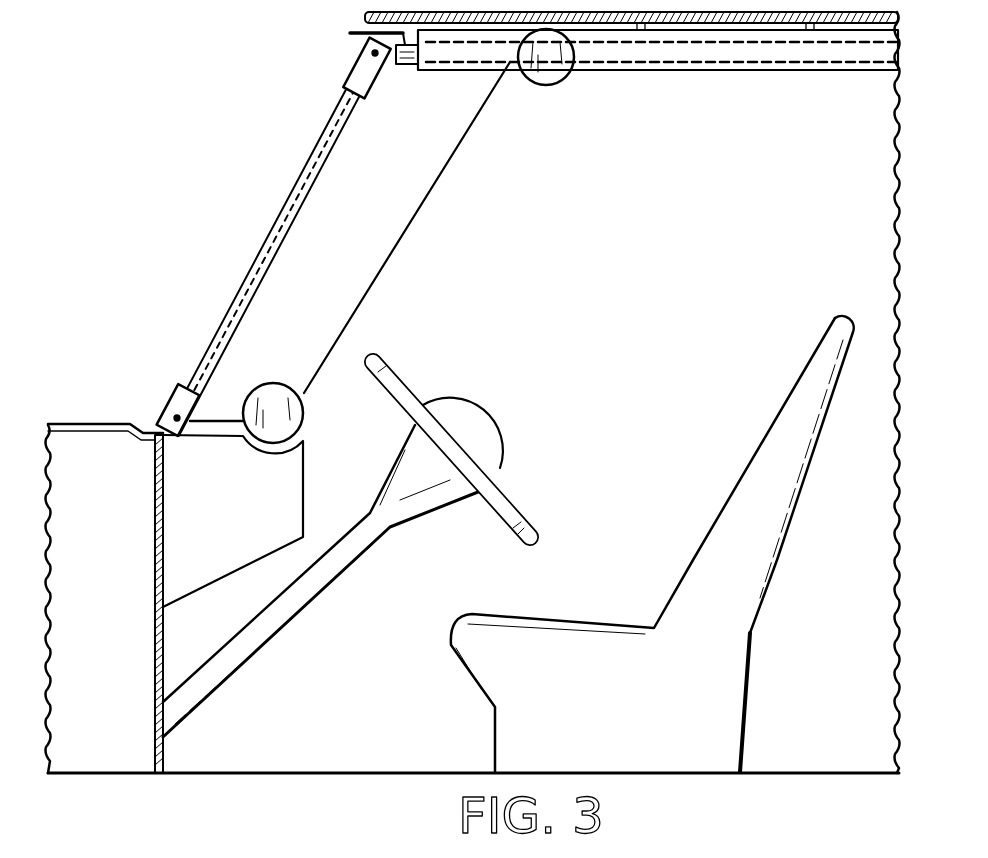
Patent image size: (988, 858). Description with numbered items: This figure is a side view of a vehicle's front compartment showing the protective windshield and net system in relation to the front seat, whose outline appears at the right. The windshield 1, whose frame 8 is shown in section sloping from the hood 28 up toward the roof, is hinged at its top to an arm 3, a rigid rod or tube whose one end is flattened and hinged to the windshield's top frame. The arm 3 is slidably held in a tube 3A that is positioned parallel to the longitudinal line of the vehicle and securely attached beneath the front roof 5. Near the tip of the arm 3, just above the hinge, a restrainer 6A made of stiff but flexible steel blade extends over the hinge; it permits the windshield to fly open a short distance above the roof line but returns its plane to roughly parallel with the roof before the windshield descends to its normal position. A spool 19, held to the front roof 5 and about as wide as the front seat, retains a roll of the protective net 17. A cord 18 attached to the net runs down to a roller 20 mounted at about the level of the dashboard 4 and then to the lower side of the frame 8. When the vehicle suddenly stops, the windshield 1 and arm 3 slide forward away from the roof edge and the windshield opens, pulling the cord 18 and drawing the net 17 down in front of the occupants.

The windshield 1 is at (266, 230).
The arm 3 is at (406, 72).
The tube 3A is at (740, 70).
The dashboard 4 is at (304, 468).
The front roof 5 is at (355, 14).
The restrainer 6A is at (352, 36).
The frame 8 is at (343, 76).
The protective net 17 is at (424, 205).
The cord 18 is at (232, 421).
The spool 19 is at (560, 86).
The roller 20 is at (294, 380).
The hood 28 is at (112, 436).